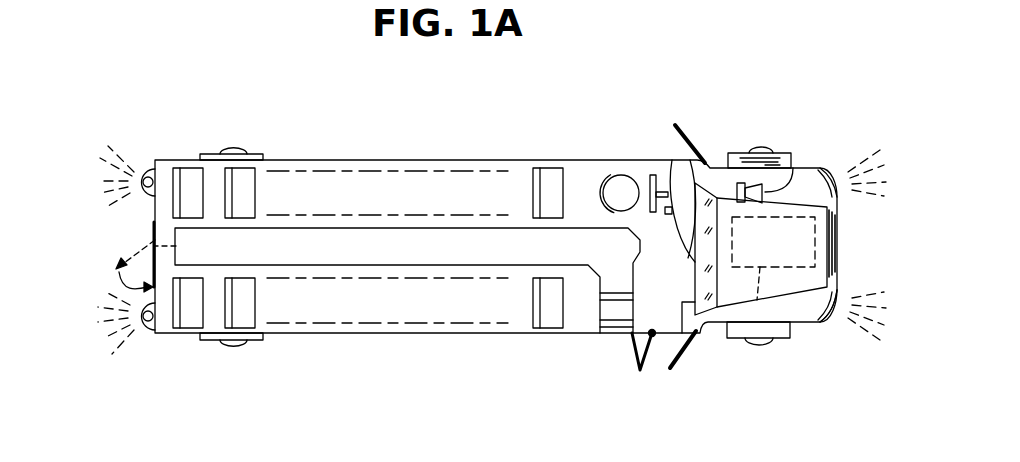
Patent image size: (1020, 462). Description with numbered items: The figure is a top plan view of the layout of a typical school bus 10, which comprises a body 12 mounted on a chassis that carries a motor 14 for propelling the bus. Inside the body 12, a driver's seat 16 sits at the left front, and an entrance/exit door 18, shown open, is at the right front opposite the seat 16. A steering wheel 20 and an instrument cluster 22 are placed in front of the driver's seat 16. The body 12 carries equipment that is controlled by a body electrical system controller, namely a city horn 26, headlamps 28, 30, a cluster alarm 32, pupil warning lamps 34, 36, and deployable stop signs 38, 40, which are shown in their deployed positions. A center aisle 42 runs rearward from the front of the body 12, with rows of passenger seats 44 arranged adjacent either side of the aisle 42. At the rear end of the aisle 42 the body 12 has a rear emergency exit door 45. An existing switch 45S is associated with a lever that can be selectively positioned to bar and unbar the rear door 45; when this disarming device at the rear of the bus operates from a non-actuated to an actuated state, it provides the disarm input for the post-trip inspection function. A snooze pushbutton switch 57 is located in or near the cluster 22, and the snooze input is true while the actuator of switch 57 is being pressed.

The school bus 10 is at (753, 88).
The body 12 is at (427, 160).
The motor 14 is at (760, 267).
The driver's seat 16 is at (618, 188).
The entrance/exit door 18 is at (637, 358).
The steering wheel 20 is at (652, 182).
The instrument cluster 22 is at (709, 185).
The city horn 26 is at (797, 168).
The headlamp 28 is at (824, 205).
The headlamp 30 is at (827, 320).
The cluster alarm 32 is at (665, 214).
The pupil warning lamp 34 is at (148, 196).
The pupil warning lamp 36 is at (146, 333).
The deployable stop sign 38 is at (703, 165).
The deployable stop sign 40 is at (688, 350).
The center aisle 42 is at (345, 245).
The passenger seats 44 is at (190, 182).
The rear emergency exit door 45 is at (177, 255).
The switch 45S is at (156, 290).
The snooze pushbutton switch 57 is at (665, 212).